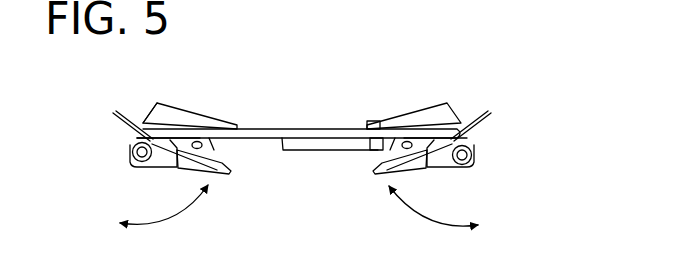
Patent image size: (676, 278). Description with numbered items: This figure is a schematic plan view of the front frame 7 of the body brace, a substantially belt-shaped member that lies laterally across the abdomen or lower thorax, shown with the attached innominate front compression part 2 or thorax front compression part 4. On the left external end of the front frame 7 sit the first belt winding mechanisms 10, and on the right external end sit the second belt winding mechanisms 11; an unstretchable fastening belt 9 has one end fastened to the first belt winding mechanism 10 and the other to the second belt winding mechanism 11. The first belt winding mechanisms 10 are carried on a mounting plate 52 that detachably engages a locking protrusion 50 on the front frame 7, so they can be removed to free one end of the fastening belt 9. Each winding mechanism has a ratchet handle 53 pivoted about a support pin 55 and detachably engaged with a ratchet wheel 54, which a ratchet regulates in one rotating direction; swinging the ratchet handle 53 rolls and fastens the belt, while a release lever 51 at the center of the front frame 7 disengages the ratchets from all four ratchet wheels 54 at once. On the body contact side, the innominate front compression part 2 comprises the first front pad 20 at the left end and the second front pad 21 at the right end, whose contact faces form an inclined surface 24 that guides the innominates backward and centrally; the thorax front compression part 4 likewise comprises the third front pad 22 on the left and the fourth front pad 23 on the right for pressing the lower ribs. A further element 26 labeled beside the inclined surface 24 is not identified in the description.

The innominate front compression part 2 is at (178, 100).
The thorax front compression part 4 is at (411, 104).
The front frame 7 is at (277, 137).
The fastening belt 9 is at (113, 117).
The first belt winding mechanism 10 is at (474, 188).
The second belt winding mechanism 11 is at (140, 184).
The first front pad 20 is at (434, 104).
The second front pad 21 is at (129, 105).
The third front pad 22 is at (448, 112).
The fourth front pad 23 is at (157, 125).
The inclined surface 24 is at (190, 100).
The arm plate 26 is at (193, 113).
The locking protrusion 50 is at (376, 150).
The release lever 51 is at (330, 150).
The mounting plate 52 is at (367, 124).
The ratchet handle 53 is at (215, 173).
The ratchet wheel 54 is at (145, 140).
The support pin 55 is at (134, 162).